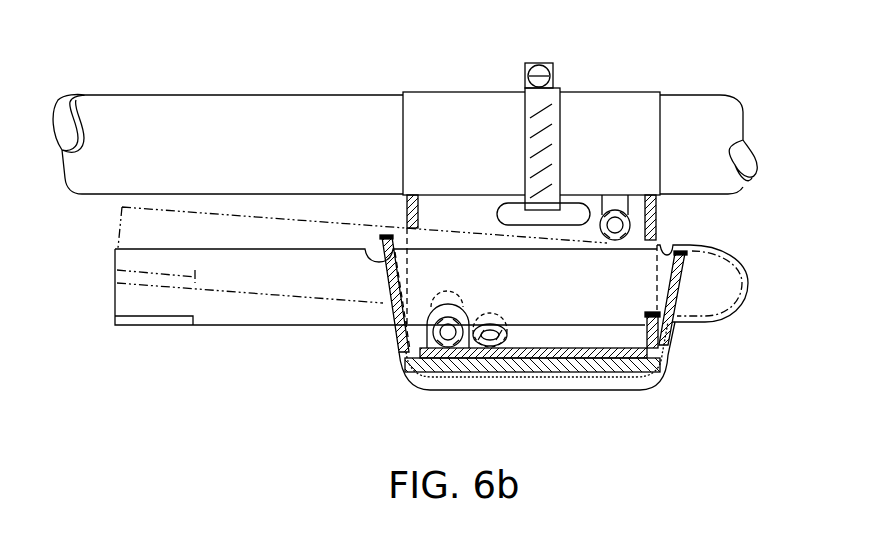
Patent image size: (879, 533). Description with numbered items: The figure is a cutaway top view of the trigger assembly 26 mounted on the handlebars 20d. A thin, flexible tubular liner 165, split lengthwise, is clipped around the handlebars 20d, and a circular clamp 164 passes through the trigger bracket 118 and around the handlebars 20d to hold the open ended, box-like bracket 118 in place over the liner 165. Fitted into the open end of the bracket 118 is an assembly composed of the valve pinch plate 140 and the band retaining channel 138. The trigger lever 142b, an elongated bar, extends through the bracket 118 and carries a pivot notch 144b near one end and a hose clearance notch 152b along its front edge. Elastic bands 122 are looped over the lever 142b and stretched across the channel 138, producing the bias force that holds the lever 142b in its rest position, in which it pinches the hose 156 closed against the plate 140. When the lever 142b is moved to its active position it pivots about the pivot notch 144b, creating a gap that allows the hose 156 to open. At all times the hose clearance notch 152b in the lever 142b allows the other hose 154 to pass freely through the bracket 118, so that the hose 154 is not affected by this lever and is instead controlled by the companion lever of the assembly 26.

The handlebars 20d is at (320, 110).
The tubular liner 165 is at (487, 105).
The circular clamp 164 is at (550, 102).
The trigger bracket 118 is at (478, 212).
The hose 156 is at (630, 227).
The trigger lever 142b is at (247, 308).
The elastic bands 122 is at (397, 340).
The band retaining channel 138 is at (565, 366).
The valve pinch plate 140 is at (628, 380).
The pivot notch 144b is at (650, 305).
The hose clearance notch 152b is at (457, 300).
The hose 154 is at (447, 350).
The trigger assembly 26 is at (285, 432).